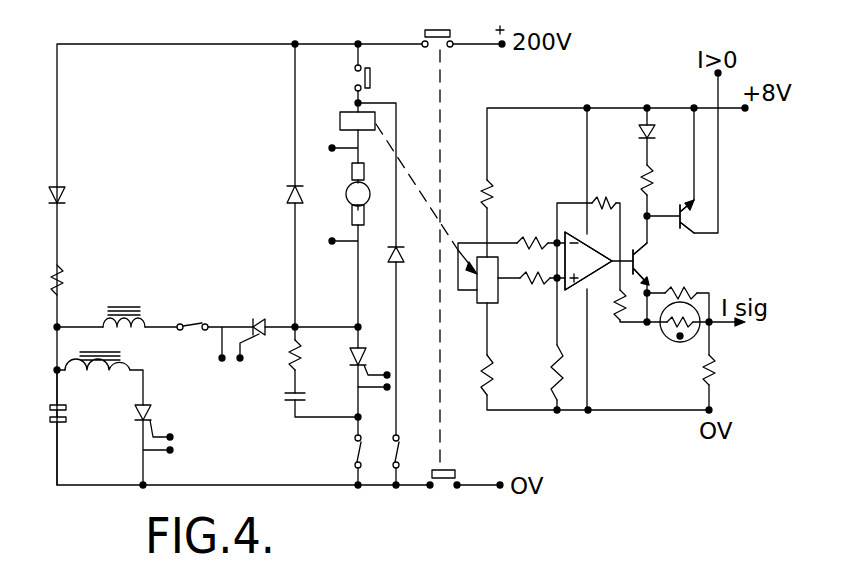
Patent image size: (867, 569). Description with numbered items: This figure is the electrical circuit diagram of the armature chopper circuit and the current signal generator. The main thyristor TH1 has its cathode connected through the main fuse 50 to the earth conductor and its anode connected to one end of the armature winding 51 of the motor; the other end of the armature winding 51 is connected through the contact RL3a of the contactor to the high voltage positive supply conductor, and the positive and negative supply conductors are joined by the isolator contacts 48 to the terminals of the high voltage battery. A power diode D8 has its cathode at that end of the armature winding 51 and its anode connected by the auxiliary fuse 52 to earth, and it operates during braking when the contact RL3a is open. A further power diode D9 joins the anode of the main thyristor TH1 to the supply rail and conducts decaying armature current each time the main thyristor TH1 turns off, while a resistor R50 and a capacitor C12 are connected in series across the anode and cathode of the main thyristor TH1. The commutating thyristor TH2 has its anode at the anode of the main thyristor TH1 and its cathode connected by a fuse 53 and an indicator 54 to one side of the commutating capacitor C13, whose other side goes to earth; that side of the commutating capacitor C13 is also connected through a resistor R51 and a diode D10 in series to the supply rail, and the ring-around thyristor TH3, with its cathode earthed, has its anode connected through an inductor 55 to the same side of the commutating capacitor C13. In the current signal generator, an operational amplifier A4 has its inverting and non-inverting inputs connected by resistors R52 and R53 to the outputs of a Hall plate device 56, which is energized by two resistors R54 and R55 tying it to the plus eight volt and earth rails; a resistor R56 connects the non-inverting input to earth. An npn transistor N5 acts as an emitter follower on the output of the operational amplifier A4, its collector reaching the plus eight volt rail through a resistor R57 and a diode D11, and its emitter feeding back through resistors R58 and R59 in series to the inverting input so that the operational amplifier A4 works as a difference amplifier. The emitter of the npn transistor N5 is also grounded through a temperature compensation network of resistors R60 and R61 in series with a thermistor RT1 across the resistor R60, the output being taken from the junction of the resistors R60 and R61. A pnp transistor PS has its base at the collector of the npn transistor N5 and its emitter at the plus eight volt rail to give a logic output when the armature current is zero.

The isolator contacts 48 is at (425, 30).
The contact of contactor RL3 RL3a is at (372, 78).
The diode D10 is at (64, 185).
The further power diode D9 is at (290, 188).
The armature winding 51 is at (350, 207).
The power diode D8 is at (393, 262).
The resistor R51 is at (65, 282).
The indicator 54 is at (130, 308).
The fuse 53 is at (197, 318).
The commutating thyristor TH2 is at (260, 340).
The inductor 55 is at (106, 378).
The ring-around thyristor TH3 is at (176, 437).
The commutating capacitor C13 is at (70, 422).
The resistor R50 is at (319, 355).
The main thyristor TH1 is at (379, 372).
The capacitor C12 is at (306, 397).
The main fuse 50 is at (355, 455).
The auxiliary fuse 52 is at (404, 452).
The resistor R54 is at (490, 190).
The resistor R52 is at (527, 230).
The resistor R53 is at (527, 298).
The Hall plate device 56 is at (471, 300).
The resistor R55 is at (486, 375).
The resistor R56 is at (550, 370).
The diode D11 is at (639, 132).
The resistor R57 is at (649, 185).
The resistor R59 is at (614, 189).
The pnp transistor PS is at (684, 216).
The npn transistor N5 is at (648, 261).
The resistor R60 is at (685, 290).
The operational amplifier A4 is at (591, 264).
The resistor R58 is at (623, 325).
The thermistor RT1 is at (682, 343).
The resistor R61 is at (714, 377).